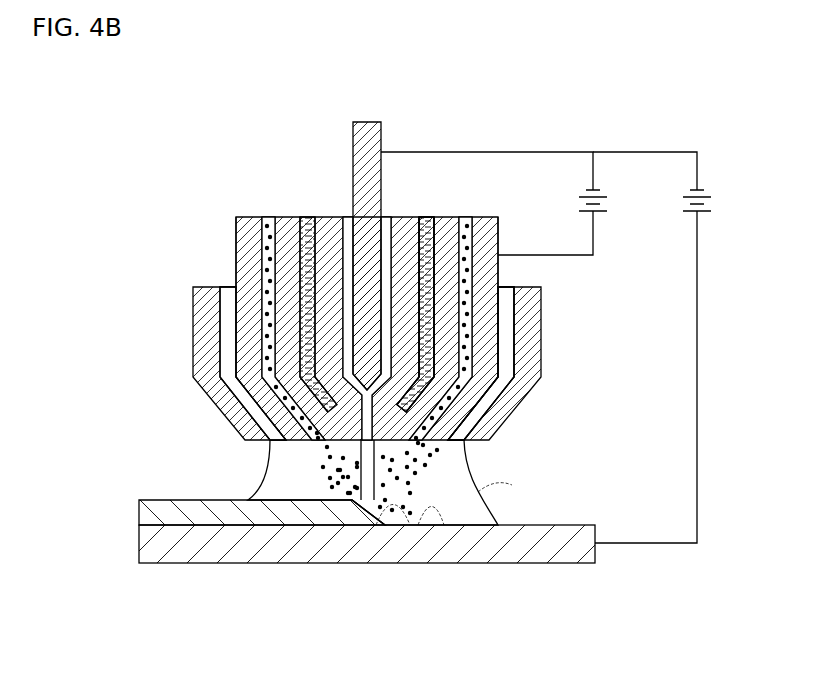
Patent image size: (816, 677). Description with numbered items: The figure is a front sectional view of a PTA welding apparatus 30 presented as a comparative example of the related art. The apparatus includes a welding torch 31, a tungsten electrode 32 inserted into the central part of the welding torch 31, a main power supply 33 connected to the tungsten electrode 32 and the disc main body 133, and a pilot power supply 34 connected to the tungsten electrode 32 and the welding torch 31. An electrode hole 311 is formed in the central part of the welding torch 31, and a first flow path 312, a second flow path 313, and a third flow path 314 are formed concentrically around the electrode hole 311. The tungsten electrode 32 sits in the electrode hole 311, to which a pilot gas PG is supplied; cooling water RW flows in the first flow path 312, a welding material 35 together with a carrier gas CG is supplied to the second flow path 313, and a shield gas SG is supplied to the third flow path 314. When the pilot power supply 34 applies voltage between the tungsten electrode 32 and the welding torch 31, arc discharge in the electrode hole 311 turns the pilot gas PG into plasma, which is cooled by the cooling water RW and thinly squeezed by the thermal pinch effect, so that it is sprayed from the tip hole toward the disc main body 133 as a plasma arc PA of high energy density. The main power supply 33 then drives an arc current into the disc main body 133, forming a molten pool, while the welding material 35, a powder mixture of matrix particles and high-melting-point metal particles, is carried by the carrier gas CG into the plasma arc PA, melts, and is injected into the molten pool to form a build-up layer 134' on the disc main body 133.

The PTA welding apparatus 30 is at (162, 165).
The welding torch 31 is at (183, 336).
The tungsten electrode 32 is at (352, 140).
The main power supply 33 is at (703, 215).
The pilot power supply 34 is at (600, 215).
The welding material 35 is at (262, 247).
The electrode hole 311 is at (397, 243).
The first flow path 312 is at (303, 243).
The second flow path 313 is at (262, 218).
The third flow path 314 is at (235, 303).
The disc main body 133 is at (527, 565).
The build-up layer 134' is at (260, 481).
The pilot gas PG is at (428, 217).
The cooling water RW is at (437, 244).
The carrier gas CG is at (482, 255).
The shield gas SG is at (521, 333).
The plasma arc PA is at (393, 490).